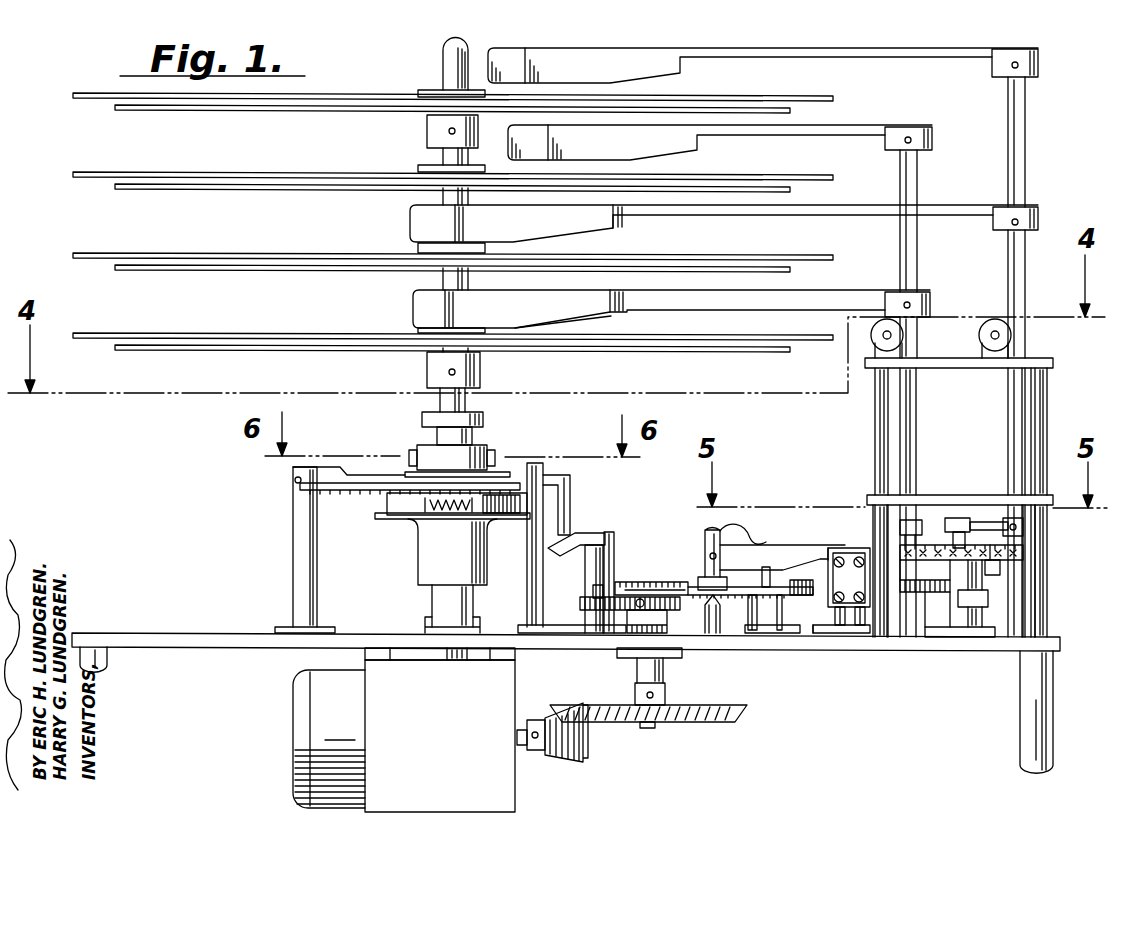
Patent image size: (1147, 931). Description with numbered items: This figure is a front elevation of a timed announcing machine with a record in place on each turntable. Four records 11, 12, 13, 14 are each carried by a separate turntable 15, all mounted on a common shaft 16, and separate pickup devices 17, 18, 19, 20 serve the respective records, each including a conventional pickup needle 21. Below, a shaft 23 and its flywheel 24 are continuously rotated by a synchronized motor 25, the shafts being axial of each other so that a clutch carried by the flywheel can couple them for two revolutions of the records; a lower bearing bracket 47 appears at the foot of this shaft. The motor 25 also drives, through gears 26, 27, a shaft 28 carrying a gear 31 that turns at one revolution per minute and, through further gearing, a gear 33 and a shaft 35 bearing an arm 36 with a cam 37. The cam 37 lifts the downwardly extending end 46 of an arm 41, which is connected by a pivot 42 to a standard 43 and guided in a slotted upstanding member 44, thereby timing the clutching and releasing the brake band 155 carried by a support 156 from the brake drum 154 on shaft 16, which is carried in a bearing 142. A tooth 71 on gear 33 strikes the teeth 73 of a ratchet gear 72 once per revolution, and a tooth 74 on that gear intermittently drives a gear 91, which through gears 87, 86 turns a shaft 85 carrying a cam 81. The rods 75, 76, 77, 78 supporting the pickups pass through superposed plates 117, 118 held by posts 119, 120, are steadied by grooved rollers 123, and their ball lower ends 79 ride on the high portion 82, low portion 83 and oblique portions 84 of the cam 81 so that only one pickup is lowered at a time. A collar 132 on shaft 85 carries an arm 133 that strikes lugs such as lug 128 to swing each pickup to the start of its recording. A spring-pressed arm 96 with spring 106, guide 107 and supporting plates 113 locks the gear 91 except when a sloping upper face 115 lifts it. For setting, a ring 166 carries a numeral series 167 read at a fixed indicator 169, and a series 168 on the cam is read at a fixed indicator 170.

The record 11 is at (828, 97).
The record 12 is at (828, 176).
The record 13 is at (828, 256).
The record 14 is at (815, 334).
The turntable 15 is at (800, 110).
The shaft 16 is at (448, 52).
The pickup device 17 is at (638, 76).
The pickup device 18 is at (666, 152).
The pickup device 19 is at (560, 226).
The pickup device 20 is at (566, 311).
The pickup needle 21 is at (552, 88).
The shaft 23 is at (450, 661).
The flywheel 24 is at (395, 519).
The synchronized motor 25 is at (352, 710).
The gear 26 is at (588, 745).
The gear 27 is at (708, 723).
The shaft 28 is at (665, 688).
The gear 31 is at (712, 634).
The gear 33 is at (585, 604).
The shaft 35 is at (611, 536).
The arm 36 is at (589, 556).
The cam 37 is at (577, 540).
The arm 41 is at (352, 492).
The pivot 42 is at (295, 481).
The standard 43 is at (300, 505).
The upstanding member 44 is at (536, 572).
The downwardly extending end 46 is at (570, 500).
The bearing bracket 47 is at (426, 623).
The tooth 71 is at (592, 590).
The ratchet gear 72 is at (693, 590).
The teeth 73 is at (784, 598).
The tooth 74 is at (818, 584).
The rod 75 is at (1008, 182).
The rod 76 is at (917, 182).
The rod 77 is at (912, 420).
The rod 78 is at (1010, 418).
The lower end 79 is at (1025, 535).
The cam 81 is at (1005, 572).
The high portion 82 is at (1025, 552).
The low portion 83 is at (989, 597).
The oblique portions 84 is at (1002, 565).
The shaft 85 is at (982, 522).
The gear 86 is at (945, 638).
The gear 87 is at (920, 593).
The gear 91 is at (826, 592).
The arm 96 is at (785, 548).
The spring 106 is at (752, 544).
The guide 107 is at (850, 548).
The supporting plates 113 is at (858, 588).
The sloping upper face 115 is at (769, 568).
The plate 117 is at (978, 368).
The plate 118 is at (868, 496).
The post 119 is at (882, 626).
The post 120 is at (875, 418).
The grooved rollers 123 is at (979, 336).
The lug 128 is at (912, 520).
The collar 132 is at (957, 518).
The arm 133 is at (985, 520).
The bearing 142 is at (438, 405).
The brake drum 154 is at (452, 468).
The brake band 155 is at (412, 450).
The support 156 is at (410, 462).
The ring 166 is at (621, 582).
The series of numerals 167 is at (662, 583).
The series of numerals 168 is at (935, 566).
The fixed indicator 169 is at (724, 630).
The fixed indicator 170 is at (1050, 640).